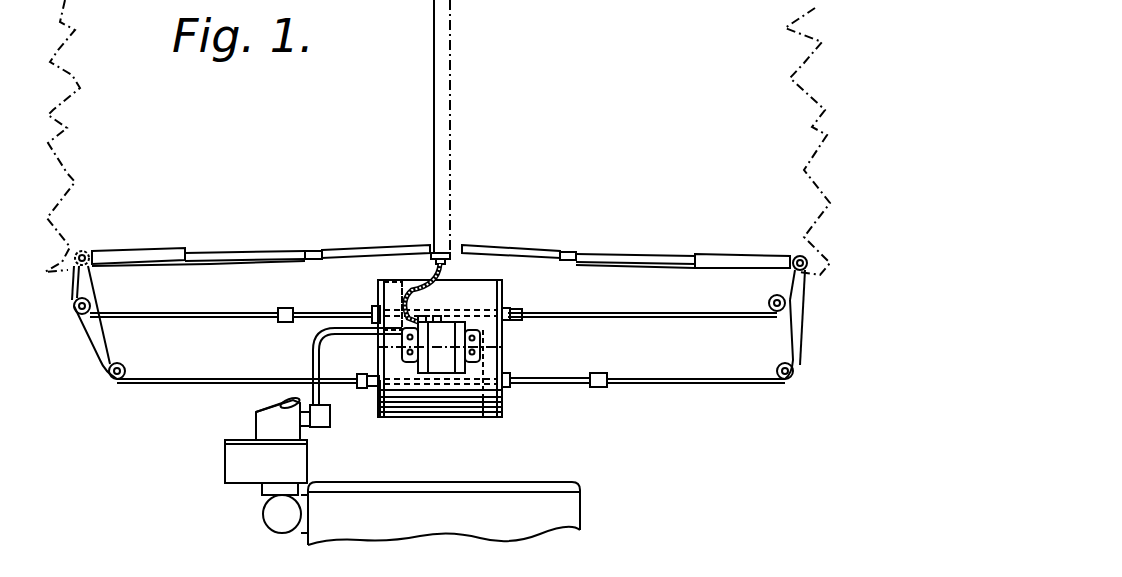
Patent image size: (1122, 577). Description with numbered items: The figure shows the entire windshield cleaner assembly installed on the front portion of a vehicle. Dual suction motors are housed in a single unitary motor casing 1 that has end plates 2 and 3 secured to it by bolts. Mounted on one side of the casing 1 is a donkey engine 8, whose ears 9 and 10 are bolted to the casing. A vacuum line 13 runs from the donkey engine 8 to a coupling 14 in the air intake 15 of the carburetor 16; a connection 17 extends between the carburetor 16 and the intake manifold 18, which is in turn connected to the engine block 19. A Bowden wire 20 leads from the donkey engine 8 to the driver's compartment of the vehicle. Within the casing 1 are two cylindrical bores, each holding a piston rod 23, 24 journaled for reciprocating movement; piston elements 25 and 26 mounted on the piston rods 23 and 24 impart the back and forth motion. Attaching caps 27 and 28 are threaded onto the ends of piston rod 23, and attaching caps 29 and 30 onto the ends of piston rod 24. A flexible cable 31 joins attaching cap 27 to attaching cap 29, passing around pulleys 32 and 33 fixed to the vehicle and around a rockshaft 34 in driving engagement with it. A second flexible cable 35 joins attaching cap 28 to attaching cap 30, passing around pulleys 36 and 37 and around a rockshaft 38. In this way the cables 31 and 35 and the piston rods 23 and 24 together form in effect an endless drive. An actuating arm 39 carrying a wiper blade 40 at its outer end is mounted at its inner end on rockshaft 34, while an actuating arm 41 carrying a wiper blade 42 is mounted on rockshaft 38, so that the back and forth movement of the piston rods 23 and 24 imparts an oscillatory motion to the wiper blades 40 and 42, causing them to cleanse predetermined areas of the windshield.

The motor casing 1 is at (455, 420).
The end plate 2 is at (380, 418).
The end plate 3 is at (500, 400).
The donkey engine 8 is at (450, 337).
The ear 9 is at (402, 352).
The ear 10 is at (476, 342).
The vacuum line 13 is at (313, 348).
The coupling 14 is at (320, 427).
The air intake 15 is at (256, 420).
The carburetor 16 is at (228, 462).
The connection 17 is at (263, 495).
The intake manifold 18 is at (280, 533).
The engine block 19 is at (572, 507).
The Bowden wire 20 is at (443, 270).
The piston rod 23 is at (343, 312).
The piston rod 24 is at (574, 376).
The piston element 25 is at (392, 278).
The piston element 26 is at (483, 418).
The attaching cap 27 is at (280, 309).
The attaching cap 28 is at (520, 309).
The attaching cap 29 is at (361, 388).
The attaching cap 30 is at (600, 390).
The flexible cable 31 is at (212, 312).
The pulley 32 is at (124, 365).
The pulley 33 is at (81, 314).
The rockshaft 34 is at (86, 252).
The flexible cable 35 is at (640, 313).
The pulley 36 is at (769, 303).
The pulley 37 is at (777, 370).
The rockshaft 38 is at (796, 256).
The actuating arm 39 is at (226, 253).
The wiper blade 40 is at (365, 248).
The actuating arm 41 is at (626, 256).
The wiper blade 42 is at (523, 250).